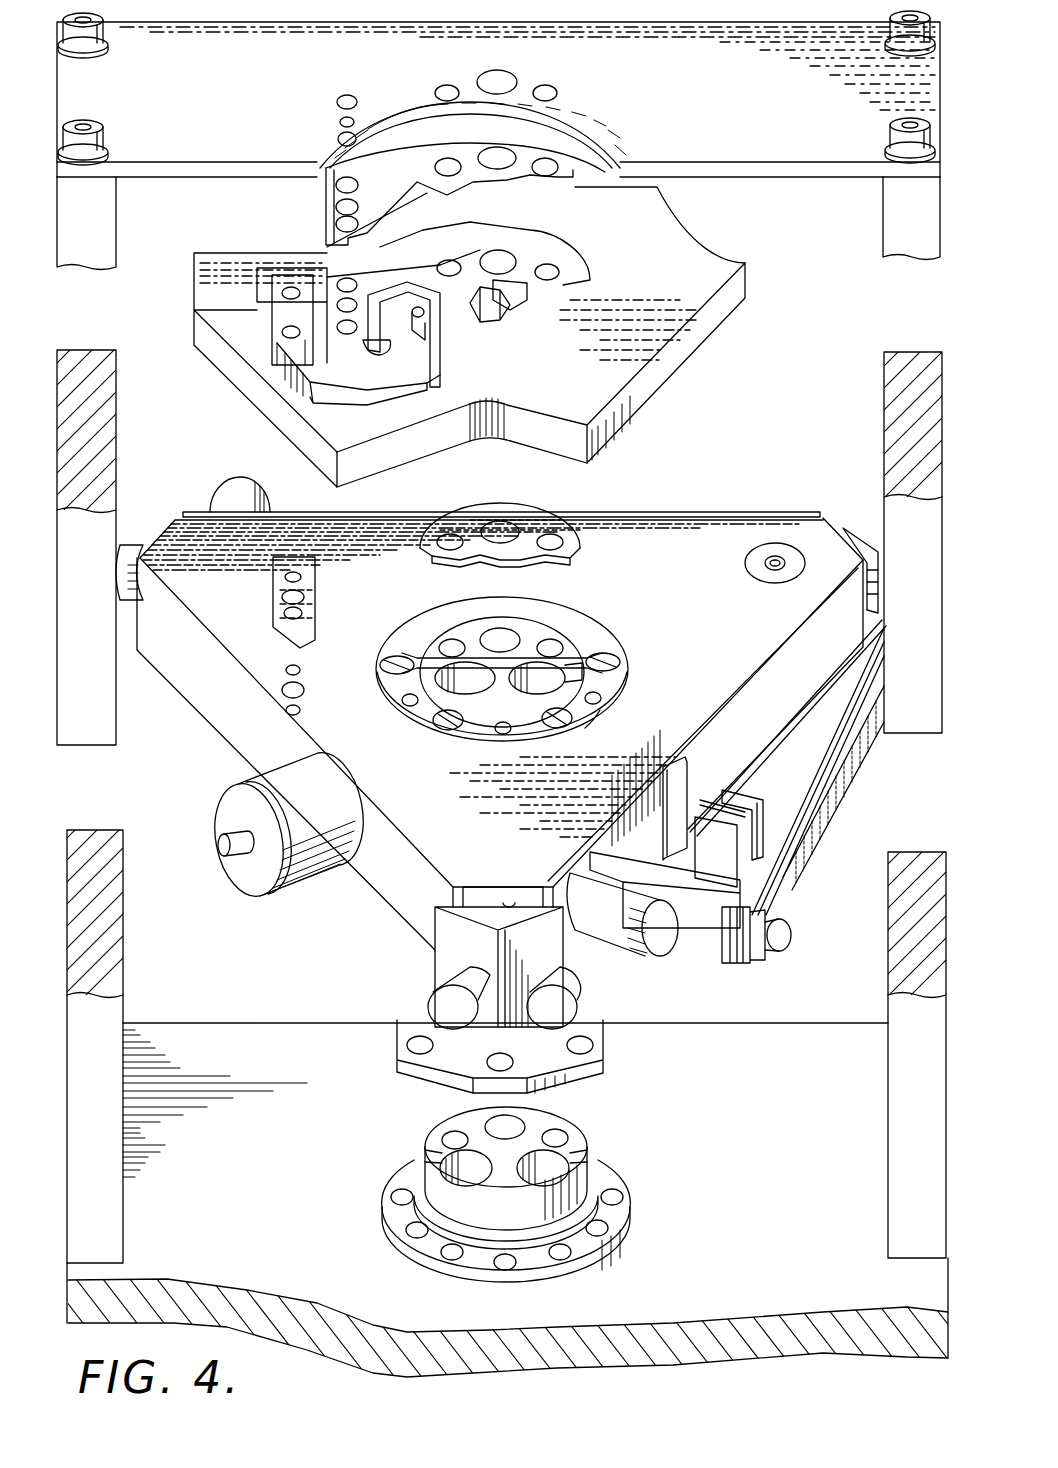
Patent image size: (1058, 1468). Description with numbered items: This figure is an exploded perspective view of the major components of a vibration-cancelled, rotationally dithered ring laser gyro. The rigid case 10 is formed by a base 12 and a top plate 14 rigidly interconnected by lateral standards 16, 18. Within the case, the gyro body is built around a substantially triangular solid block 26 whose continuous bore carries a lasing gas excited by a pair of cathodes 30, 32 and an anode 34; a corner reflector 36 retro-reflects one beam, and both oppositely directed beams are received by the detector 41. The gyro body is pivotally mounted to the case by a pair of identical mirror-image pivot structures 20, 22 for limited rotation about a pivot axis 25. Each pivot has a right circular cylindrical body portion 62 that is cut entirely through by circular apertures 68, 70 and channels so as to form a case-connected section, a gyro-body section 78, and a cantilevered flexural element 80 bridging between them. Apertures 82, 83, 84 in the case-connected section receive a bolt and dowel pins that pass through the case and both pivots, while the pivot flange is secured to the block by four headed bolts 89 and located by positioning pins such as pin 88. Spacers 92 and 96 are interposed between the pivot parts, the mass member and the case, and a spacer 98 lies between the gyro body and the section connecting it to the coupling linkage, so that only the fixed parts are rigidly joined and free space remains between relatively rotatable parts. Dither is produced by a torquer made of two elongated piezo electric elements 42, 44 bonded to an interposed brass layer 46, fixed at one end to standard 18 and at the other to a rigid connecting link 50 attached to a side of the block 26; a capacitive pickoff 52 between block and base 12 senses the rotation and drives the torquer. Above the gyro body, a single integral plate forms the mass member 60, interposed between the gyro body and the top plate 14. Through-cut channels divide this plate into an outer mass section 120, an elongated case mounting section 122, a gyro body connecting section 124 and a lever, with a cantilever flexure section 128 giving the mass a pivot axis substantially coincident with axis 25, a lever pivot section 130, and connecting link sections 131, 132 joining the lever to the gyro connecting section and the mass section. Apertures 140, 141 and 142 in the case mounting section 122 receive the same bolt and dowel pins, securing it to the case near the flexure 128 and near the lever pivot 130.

The rigid case 10 is at (516, 1328).
The base 12 is at (712, 1357).
The top plate 14 is at (228, 170).
The lateral standard 16 is at (118, 237).
The lateral standard 18 is at (882, 237).
The pivot structure 20 is at (529, 664).
The pivot structure 22 is at (600, 1160).
The pivot axis 25 is at (528, 296).
The solid block 26 is at (475, 842).
The cathode 30 is at (622, 952).
The cathode 32 is at (210, 495).
The anode 34 is at (746, 560).
The corner reflector 36 is at (570, 1003).
The detector 41 is at (430, 978).
The piezo electric element 42 is at (826, 822).
The piezo electric element 44 is at (826, 748).
The brass layer 46 is at (822, 770).
The connecting link 50 is at (660, 850).
The capacitive pickoff 52 is at (723, 790).
The mass member 60 is at (475, 337).
The cylindrical body portion 62 is at (578, 635).
The circular aperture 68 is at (563, 680).
The circular aperture 70 is at (472, 692).
The second section 78 is at (590, 714).
The cantilevered flexural element 80 is at (548, 690).
The aperture 82 is at (500, 630).
The aperture 83 is at (445, 645).
The aperture 84 is at (552, 640).
The positioning pin 88 is at (403, 702).
The headed bolt 89 is at (445, 724).
The spacer 92 is at (522, 510).
The spacer 96 is at (418, 148).
The spacer 98 is at (272, 590).
The mass section 120 is at (469, 337).
The case mounting section 122 is at (480, 218).
The gyro body connecting section 124 is at (277, 330).
The cantilever flexure section 128 is at (486, 320).
The lever pivot section 130 is at (383, 356).
The connecting link section 131 is at (318, 372).
The connecting link section 132 is at (423, 340).
The aperture 140 is at (502, 256).
The aperture 141 is at (440, 268).
The aperture 142 is at (552, 270).